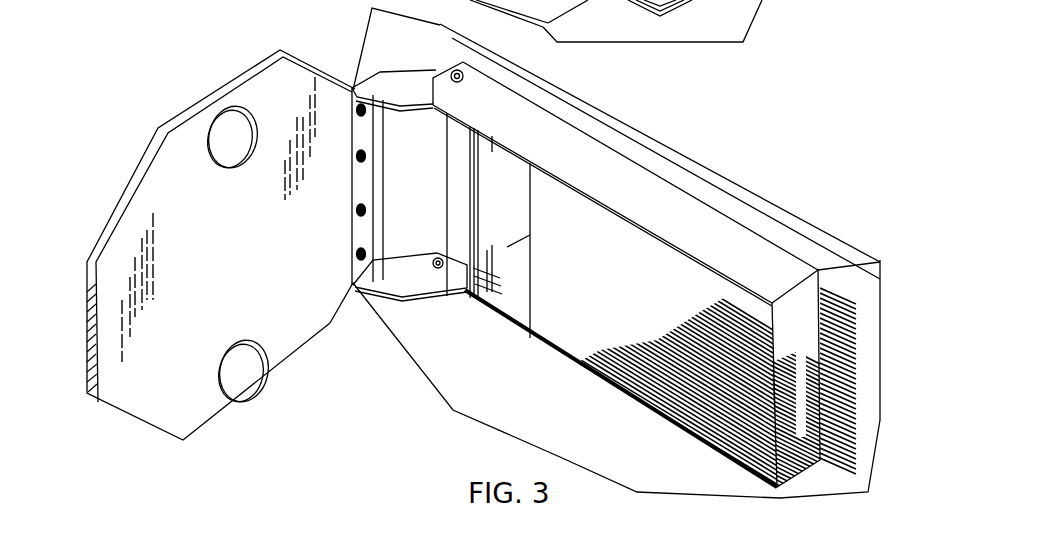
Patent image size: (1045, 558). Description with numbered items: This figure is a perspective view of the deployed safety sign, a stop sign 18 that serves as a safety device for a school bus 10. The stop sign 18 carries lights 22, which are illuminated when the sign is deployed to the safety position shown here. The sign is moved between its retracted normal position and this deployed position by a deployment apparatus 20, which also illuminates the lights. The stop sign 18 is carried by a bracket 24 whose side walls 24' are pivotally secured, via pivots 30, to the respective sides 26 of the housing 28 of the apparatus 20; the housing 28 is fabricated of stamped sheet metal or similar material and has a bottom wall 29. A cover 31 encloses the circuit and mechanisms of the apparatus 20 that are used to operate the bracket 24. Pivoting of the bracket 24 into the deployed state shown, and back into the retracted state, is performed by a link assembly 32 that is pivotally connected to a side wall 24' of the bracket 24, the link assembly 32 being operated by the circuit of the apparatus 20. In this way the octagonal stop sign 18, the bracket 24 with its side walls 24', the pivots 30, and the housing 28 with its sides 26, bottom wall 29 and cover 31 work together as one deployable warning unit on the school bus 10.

The school bus 10 is at (823, 242).
The stop sign 18 is at (152, 148).
The deployment apparatus 20 is at (697, 220).
The lights 22 is at (233, 122).
The bracket 24 is at (420, 244).
The side walls 24' is at (388, 224).
The sides 26 is at (627, 190).
The housing 28 is at (512, 325).
The bottom wall 29 is at (507, 247).
The pivots 30 is at (463, 66).
The cover 31 is at (657, 283).
The link assembly 32 is at (463, 127).